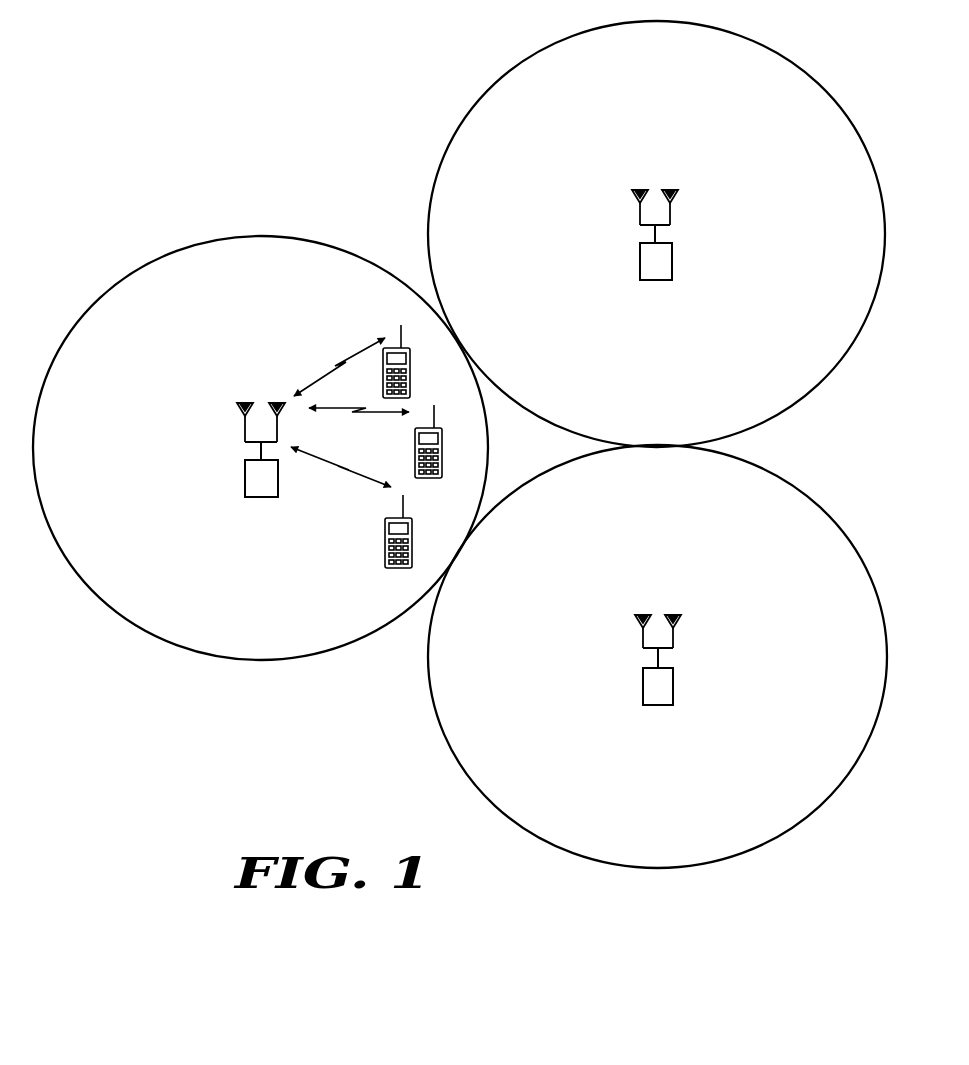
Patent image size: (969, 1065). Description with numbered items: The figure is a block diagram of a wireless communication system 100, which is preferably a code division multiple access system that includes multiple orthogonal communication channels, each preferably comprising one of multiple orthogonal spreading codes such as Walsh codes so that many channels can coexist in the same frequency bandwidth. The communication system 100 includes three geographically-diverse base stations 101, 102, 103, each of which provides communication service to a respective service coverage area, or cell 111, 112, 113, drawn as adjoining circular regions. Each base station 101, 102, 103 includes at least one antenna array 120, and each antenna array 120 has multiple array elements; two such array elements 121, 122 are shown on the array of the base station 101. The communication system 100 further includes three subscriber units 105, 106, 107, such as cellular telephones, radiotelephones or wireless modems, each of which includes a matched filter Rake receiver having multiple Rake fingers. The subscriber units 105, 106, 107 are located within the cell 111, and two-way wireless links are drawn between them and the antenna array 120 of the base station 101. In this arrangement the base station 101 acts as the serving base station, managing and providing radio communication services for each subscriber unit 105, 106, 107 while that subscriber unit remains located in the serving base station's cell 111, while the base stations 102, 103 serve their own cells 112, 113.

The wireless communication system 100 is at (341, 825).
The base station 101 is at (263, 497).
The base station 102 is at (657, 280).
The base station 103 is at (659, 705).
The subscriber unit 105 is at (410, 385).
The subscriber unit 106 is at (442, 468).
The subscriber unit 107 is at (412, 544).
The cell 111 is at (243, 649).
The cell 112 is at (855, 146).
The cell 113 is at (858, 576).
The antenna array 120 is at (458, 402).
The array element 121 is at (245, 430).
The array element 122 is at (277, 430).